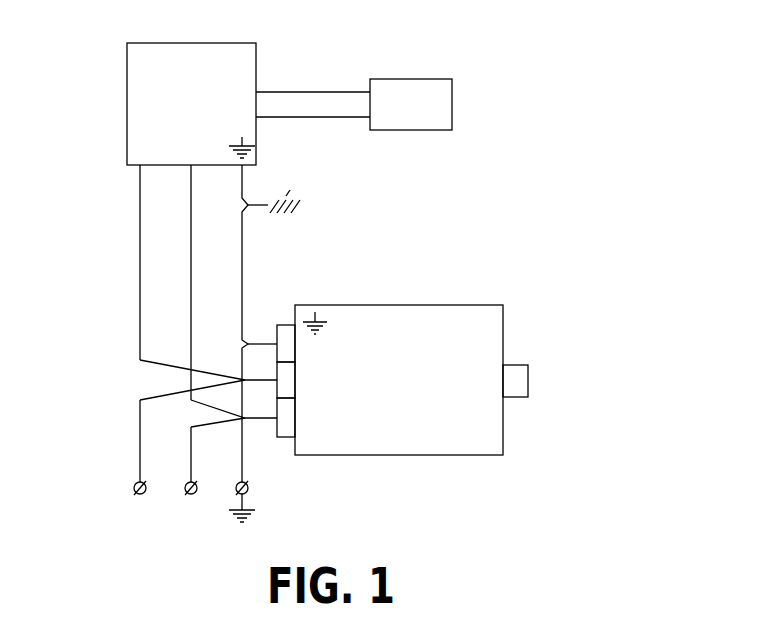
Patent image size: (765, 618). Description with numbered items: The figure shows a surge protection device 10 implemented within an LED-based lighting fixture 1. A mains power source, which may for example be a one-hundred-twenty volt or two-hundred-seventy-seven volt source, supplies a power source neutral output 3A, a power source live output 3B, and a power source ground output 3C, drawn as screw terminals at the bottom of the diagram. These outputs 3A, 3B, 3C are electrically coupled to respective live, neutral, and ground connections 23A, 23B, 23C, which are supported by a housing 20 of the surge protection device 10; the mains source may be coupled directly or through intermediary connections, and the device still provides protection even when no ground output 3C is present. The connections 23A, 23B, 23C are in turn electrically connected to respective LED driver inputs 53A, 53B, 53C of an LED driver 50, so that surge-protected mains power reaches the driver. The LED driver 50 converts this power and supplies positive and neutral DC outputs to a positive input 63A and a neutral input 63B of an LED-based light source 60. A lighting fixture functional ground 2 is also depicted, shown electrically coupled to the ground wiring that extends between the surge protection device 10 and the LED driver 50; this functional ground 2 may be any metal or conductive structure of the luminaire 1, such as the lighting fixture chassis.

The LED-based lighting fixture 1 is at (594, 68).
The lighting fixture functional ground 2 is at (300, 206).
The power source neutral output 3A is at (133, 486).
The power source live output 3B is at (185, 483).
The power source ground output 3C is at (237, 484).
The surge protection device 10 is at (538, 313).
The housing 20 is at (458, 305).
The live connection 23A is at (283, 437).
The neutral connection 23B is at (285, 373).
The ground connection 23C is at (288, 330).
The LED driver 50 is at (127, 100).
The LED driver input 53A is at (140, 167).
The LED driver input 53B is at (191, 167).
The LED driver input 53C is at (243, 167).
The LED-based light source 60 is at (429, 79).
The positive input 63A is at (369, 91).
The neutral input 63B is at (369, 118).